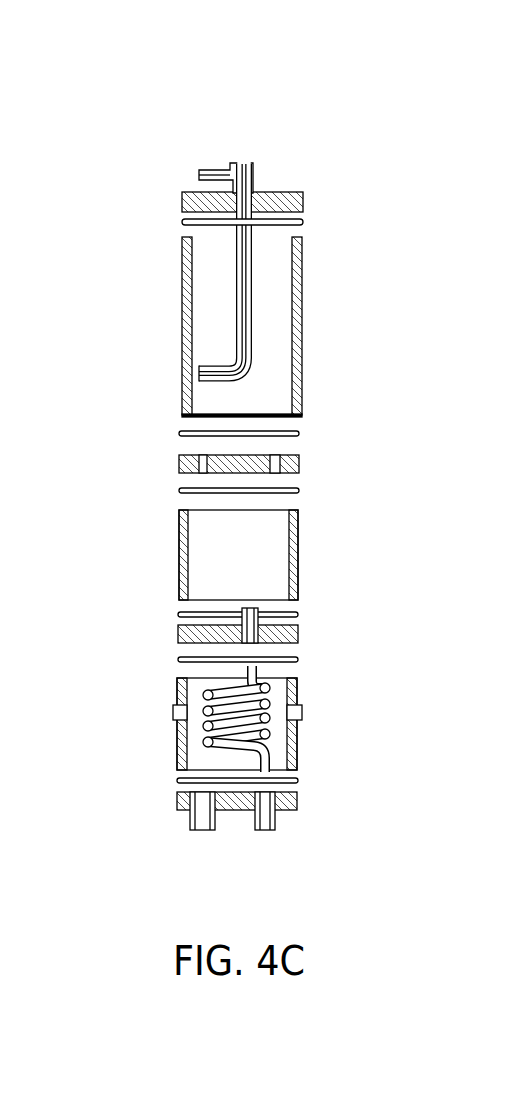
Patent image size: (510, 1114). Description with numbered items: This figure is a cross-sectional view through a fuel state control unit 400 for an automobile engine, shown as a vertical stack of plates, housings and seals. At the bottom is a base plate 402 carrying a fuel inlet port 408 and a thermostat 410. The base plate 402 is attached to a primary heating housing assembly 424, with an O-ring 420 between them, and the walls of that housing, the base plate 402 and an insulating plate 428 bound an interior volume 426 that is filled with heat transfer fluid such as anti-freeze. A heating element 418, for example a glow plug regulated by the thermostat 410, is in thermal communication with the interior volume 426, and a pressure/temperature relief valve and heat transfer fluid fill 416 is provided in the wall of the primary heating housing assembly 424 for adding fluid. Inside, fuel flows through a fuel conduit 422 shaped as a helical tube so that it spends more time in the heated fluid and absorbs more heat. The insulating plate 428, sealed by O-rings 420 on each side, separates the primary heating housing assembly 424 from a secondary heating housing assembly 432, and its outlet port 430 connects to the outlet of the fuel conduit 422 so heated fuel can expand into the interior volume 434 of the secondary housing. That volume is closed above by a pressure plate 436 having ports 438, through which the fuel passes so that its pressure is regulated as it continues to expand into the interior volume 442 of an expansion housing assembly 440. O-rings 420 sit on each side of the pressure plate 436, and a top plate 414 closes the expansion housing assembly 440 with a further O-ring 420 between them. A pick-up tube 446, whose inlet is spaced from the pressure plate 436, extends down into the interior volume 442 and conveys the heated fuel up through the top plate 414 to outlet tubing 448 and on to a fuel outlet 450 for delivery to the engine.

The fuel state control unit 400 is at (98, 86).
The base plate 402 is at (328, 809).
The fuel inlet port 408 is at (300, 838).
The thermostat 410 is at (159, 836).
The top plate 414 is at (319, 173).
The pressure/temperature relief valve and heat transfer fluid fill 416 is at (334, 711).
The heating element 418 is at (147, 730).
The O-ring 420 is at (157, 207).
The fuel conduit 422 is at (317, 758).
The primary heating housing assembly 424 is at (331, 674).
The interior volume 426 is at (148, 693).
The insulating plate 428 is at (330, 618).
The outlet port 430 is at (300, 588).
The secondary heating housing assembly 432 is at (146, 541).
The interior volume 434 is at (258, 566).
The pressure plate 436 is at (140, 455).
The port 438 is at (165, 440).
The expansion housing assembly 440 is at (148, 262).
The interior volume 442 is at (303, 289).
The pick-up tube 446 is at (163, 355).
The outlet tubing 448 is at (277, 173).
The fuel outlet 450 is at (189, 151).